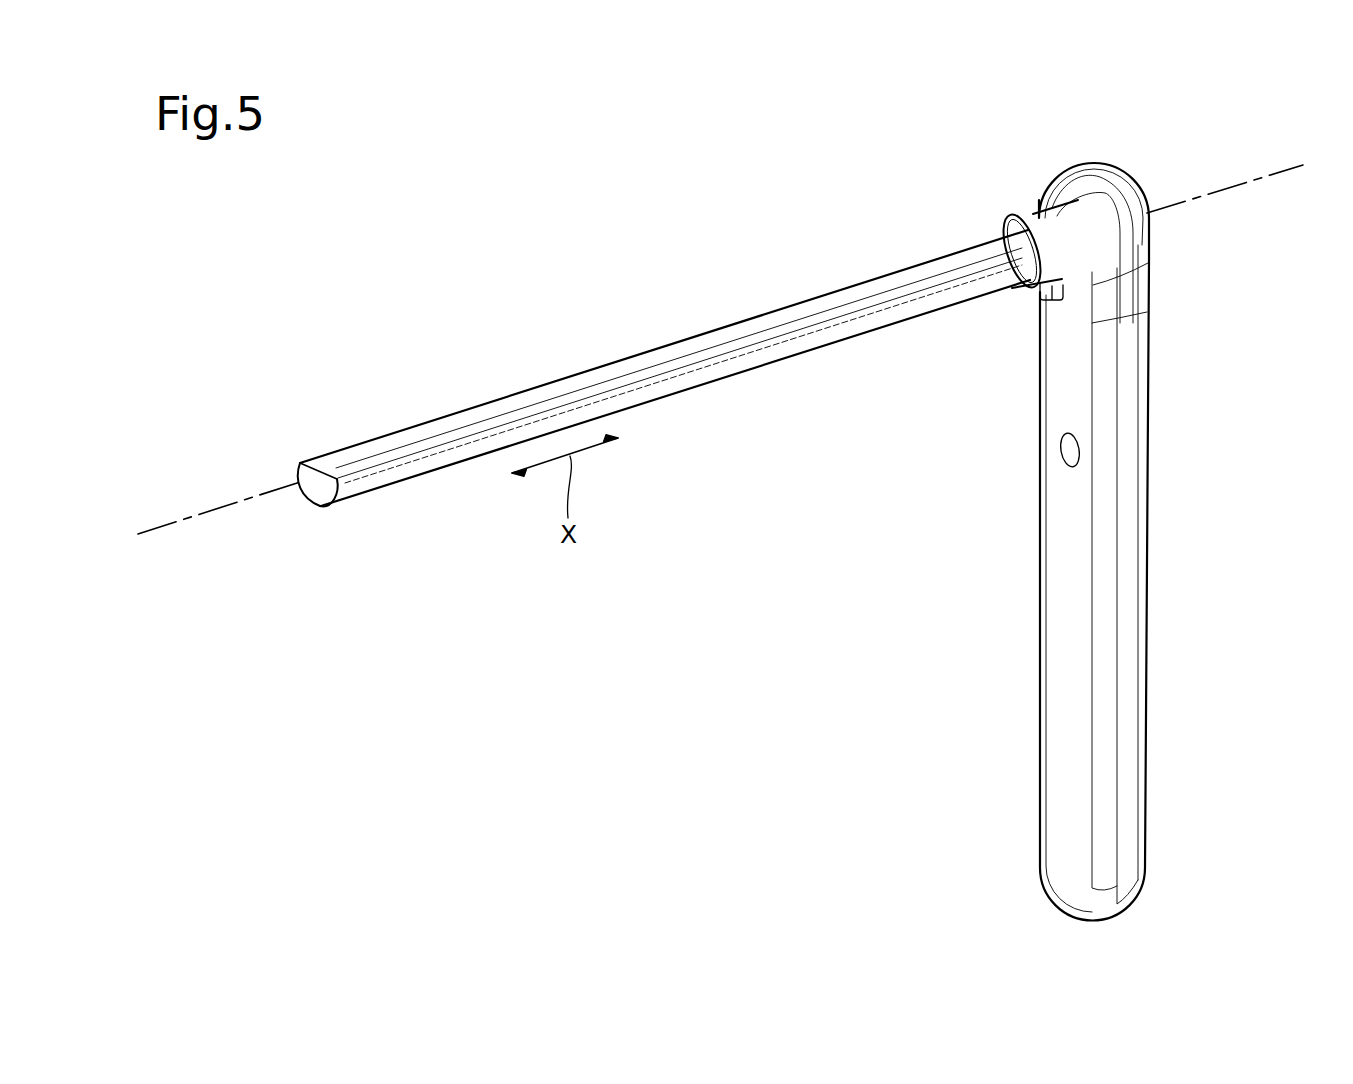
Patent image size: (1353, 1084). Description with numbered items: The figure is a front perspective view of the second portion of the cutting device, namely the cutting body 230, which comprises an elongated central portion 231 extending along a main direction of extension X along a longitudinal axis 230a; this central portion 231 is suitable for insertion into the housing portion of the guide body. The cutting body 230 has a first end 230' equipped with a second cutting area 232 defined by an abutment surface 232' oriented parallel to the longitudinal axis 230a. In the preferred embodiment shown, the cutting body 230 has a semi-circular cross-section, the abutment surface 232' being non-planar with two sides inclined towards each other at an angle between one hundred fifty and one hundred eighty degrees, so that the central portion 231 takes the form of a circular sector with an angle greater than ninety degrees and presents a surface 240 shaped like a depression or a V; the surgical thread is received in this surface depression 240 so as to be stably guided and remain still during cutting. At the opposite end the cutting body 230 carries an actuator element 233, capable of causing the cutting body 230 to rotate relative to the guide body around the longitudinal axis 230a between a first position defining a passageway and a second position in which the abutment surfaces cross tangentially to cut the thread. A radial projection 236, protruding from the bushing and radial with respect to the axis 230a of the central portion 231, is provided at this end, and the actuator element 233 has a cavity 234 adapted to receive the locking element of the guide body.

The cutting body 230 is at (735, 569).
The first end 230' is at (310, 571).
The longitudinal axis 230a is at (165, 526).
The central portion 231 is at (722, 380).
The second cutting area 232 is at (291, 373).
The abutment surface 232' is at (353, 379).
The actuator element 233 is at (1068, 800).
The cavity 234 is at (1068, 450).
The radial projection 236 is at (1042, 290).
The surface 240 is at (490, 414).